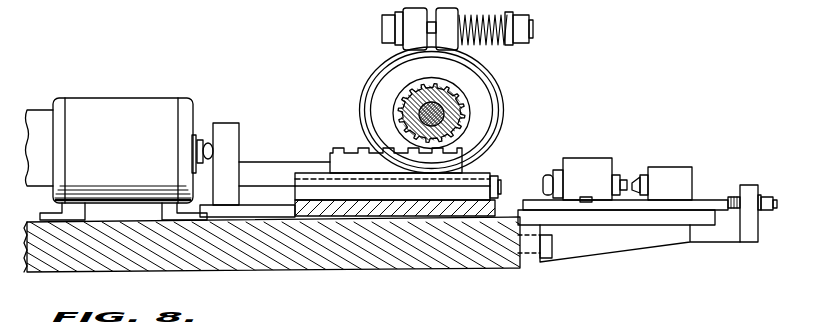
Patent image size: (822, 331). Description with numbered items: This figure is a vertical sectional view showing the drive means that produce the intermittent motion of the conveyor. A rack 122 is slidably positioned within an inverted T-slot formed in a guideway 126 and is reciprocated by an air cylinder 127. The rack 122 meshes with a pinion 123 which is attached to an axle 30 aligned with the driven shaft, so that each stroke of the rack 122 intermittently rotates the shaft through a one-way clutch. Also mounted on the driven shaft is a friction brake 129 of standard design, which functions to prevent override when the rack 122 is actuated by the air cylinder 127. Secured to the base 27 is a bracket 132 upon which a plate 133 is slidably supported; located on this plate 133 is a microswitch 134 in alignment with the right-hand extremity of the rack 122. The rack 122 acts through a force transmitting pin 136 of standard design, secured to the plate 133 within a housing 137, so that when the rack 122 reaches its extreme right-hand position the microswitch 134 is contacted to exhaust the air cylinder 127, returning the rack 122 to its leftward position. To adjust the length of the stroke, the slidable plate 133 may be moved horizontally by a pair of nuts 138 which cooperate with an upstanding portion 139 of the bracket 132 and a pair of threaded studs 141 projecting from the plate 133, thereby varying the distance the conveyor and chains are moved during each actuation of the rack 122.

The base 27 is at (258, 248).
The axle 30 is at (427, 117).
The rack 122 is at (330, 153).
The pinion 123 is at (405, 100).
The guideway 126 is at (385, 207).
The air cylinder 127 is at (122, 107).
The friction brake 129 is at (485, 72).
The bracket 132 is at (617, 240).
The plate 133 is at (697, 203).
The microswitch 134 is at (660, 175).
The force transmitting pin 136 is at (543, 183).
The housing 137 is at (582, 167).
The adjusting screw 138 is at (763, 188).
The upstanding portion 139 is at (750, 230).
The threaded studs 141 is at (737, 212).